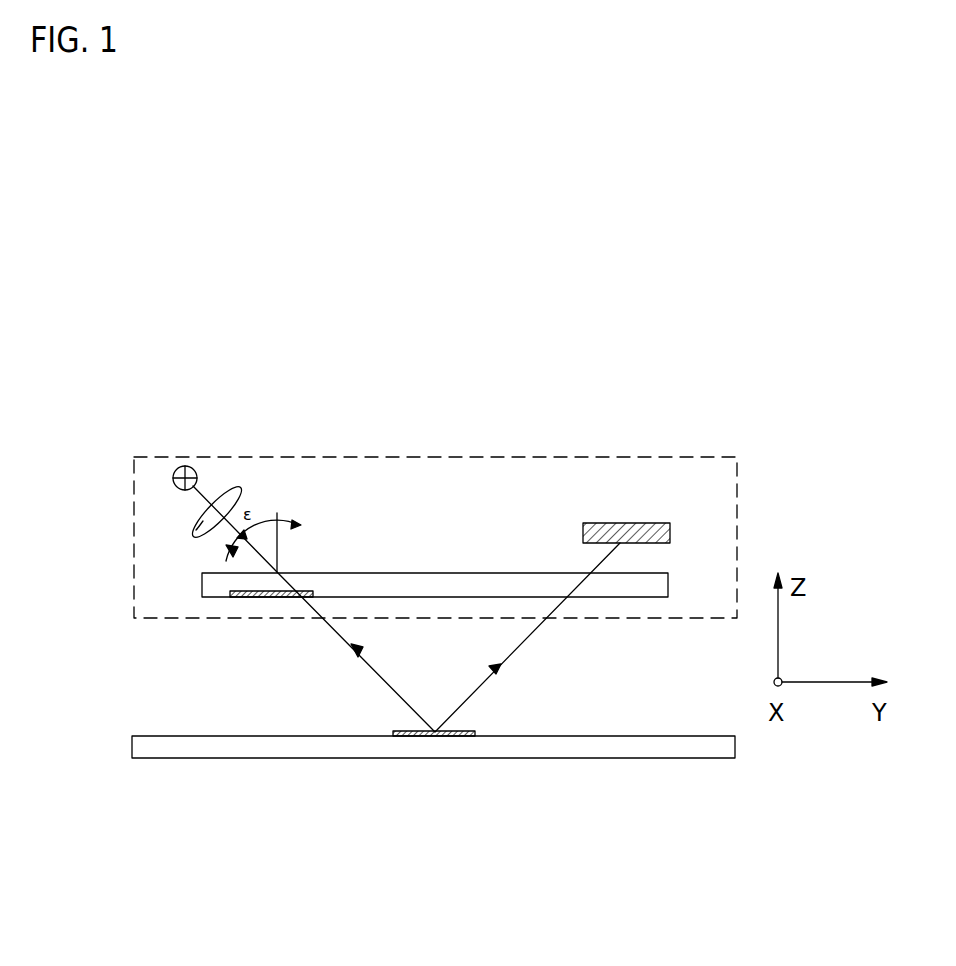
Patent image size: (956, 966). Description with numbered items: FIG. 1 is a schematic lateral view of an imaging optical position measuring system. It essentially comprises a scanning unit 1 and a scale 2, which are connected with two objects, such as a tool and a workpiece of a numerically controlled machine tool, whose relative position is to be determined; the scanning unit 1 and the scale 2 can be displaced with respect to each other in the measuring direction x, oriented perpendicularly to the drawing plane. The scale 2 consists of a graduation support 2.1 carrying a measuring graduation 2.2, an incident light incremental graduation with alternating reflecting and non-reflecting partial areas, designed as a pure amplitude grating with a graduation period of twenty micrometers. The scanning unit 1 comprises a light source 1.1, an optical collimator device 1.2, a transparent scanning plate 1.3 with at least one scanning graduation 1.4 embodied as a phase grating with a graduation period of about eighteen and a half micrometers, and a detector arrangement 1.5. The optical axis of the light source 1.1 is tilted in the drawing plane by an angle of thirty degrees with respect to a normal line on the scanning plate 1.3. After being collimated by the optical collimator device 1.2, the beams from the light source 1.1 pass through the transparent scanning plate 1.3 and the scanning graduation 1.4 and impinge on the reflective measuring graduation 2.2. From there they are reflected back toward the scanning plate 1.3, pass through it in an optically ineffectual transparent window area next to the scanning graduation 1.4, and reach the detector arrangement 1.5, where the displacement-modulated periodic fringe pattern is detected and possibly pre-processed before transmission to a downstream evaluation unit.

The scanning unit 1 is at (158, 445).
The light source 1.1 is at (190, 467).
The optical collimator device 1.2 is at (195, 535).
The transparent scanning plate 1.3 is at (202, 597).
The scanning graduation 1.4 is at (250, 597).
The detector arrangement 1.5 is at (634, 523).
The scale 2 is at (177, 762).
The graduation support 2.1 is at (648, 748).
The measuring graduation 2.2 is at (465, 731).